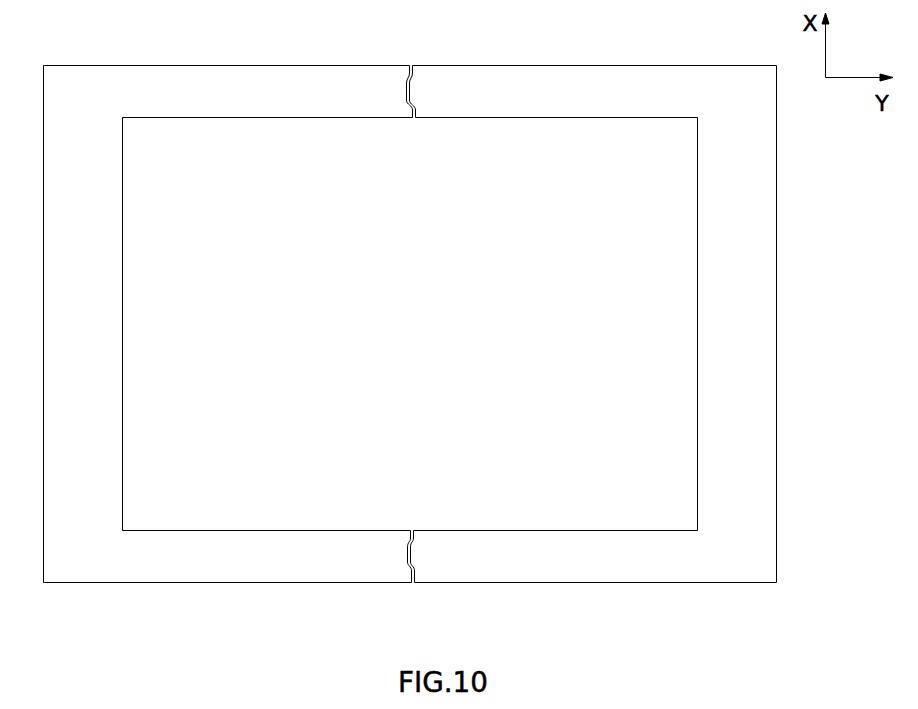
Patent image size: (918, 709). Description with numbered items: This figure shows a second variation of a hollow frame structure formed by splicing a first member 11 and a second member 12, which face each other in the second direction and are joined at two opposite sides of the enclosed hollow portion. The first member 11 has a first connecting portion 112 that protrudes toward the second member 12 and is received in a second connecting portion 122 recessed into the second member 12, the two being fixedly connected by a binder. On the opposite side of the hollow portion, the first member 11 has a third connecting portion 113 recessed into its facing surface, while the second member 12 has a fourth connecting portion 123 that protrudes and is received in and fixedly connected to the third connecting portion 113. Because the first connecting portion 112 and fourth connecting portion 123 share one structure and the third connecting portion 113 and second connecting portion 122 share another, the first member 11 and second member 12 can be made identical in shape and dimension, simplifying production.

The first member 11 is at (202, 603).
The second member 12 is at (592, 605).
The first connecting portion 112 is at (410, 106).
The third connecting portion 113 is at (413, 81).
The second connecting portion 122 is at (416, 108).
The fourth connecting portion 123 is at (411, 83).